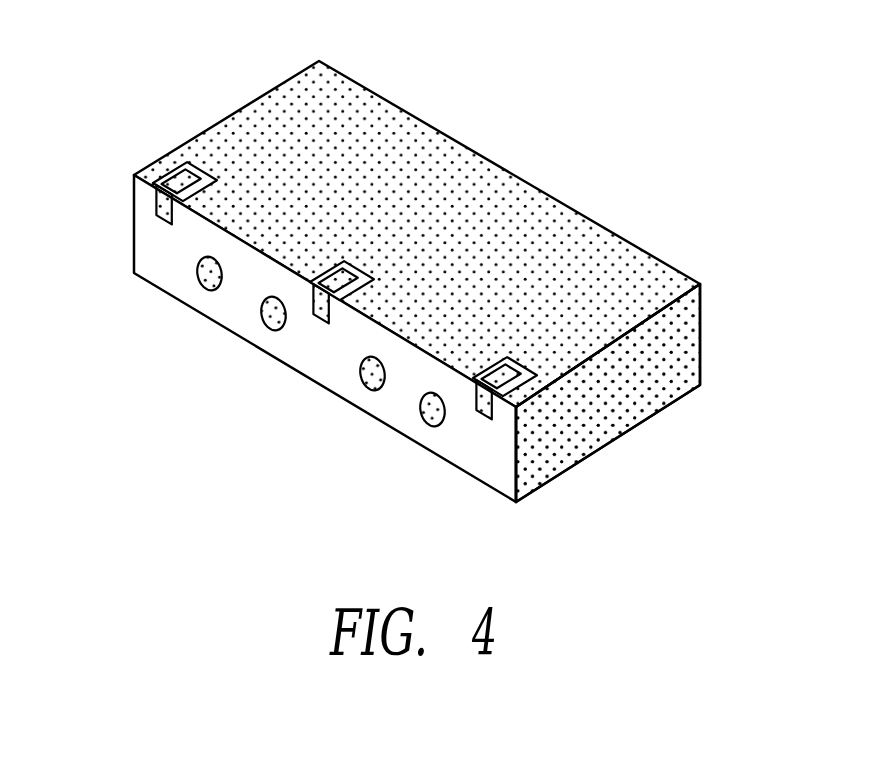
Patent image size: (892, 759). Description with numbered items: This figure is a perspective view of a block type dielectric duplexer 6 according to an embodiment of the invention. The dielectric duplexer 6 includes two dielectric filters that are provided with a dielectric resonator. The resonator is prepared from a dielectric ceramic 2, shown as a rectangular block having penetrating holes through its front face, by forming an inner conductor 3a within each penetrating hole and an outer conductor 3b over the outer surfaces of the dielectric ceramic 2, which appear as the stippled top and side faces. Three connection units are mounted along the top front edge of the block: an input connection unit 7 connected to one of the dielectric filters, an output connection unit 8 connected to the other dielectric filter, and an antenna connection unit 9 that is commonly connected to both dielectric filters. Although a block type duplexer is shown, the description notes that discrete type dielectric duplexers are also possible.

The dielectric ceramic 2 is at (495, 473).
The inner conductor 3a is at (197, 272).
The outer conductor 3b is at (565, 438).
The dielectric duplexer 6 is at (90, 61).
The input connection unit 7 is at (182, 183).
The output connection unit 8 is at (473, 378).
The antenna connection unit 9 is at (310, 282).